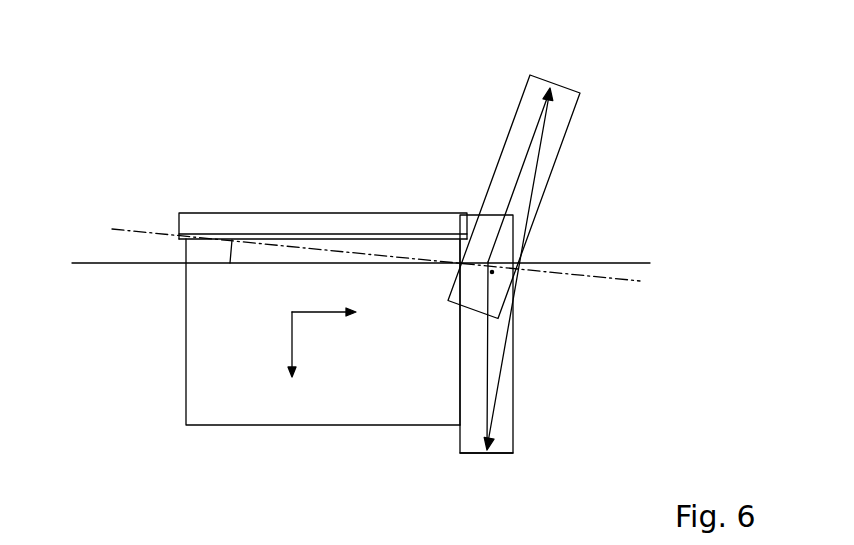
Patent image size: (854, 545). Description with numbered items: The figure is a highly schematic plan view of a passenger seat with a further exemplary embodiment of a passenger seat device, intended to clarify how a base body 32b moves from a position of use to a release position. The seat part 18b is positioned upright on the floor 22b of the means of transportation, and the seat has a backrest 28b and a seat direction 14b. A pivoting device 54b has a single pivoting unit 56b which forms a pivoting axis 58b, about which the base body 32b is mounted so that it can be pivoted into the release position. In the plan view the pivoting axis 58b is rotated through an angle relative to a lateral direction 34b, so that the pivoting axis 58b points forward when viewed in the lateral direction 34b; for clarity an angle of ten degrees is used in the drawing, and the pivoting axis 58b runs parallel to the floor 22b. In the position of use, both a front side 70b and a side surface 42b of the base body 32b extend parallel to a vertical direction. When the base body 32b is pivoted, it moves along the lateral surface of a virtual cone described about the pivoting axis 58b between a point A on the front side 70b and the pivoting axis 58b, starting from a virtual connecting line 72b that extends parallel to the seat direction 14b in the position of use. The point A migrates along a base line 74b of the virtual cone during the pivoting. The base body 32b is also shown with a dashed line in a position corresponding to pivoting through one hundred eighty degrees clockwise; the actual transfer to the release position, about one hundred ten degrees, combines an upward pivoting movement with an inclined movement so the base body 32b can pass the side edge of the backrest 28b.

The floor 22b is at (372, 130).
The backrest 28b is at (367, 225).
The seat part 18b is at (215, 412).
The base body 32b is at (514, 374).
The side surface 42b is at (457, 363).
The front side 70b is at (500, 455).
The base line 74b is at (540, 163).
The pivoting device 54b is at (506, 244).
The pivoting unit 56b is at (493, 273).
The virtual connecting line 72b is at (490, 398).
The lateral direction 34b is at (322, 312).
The seat direction 14b is at (290, 350).
The pivoting axis 58b is at (163, 233).
The point A is at (554, 90).